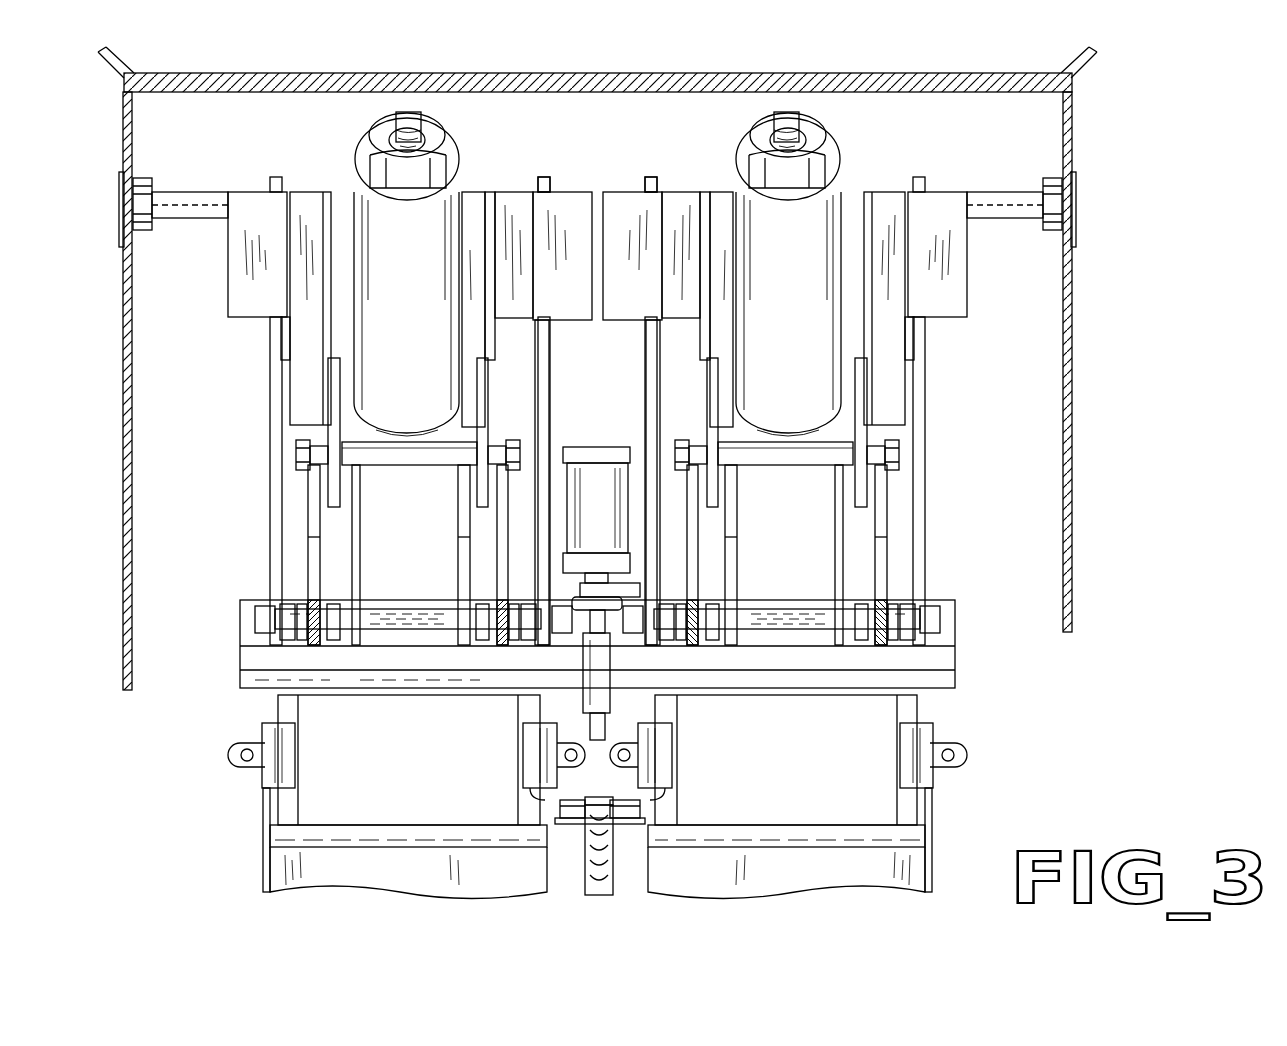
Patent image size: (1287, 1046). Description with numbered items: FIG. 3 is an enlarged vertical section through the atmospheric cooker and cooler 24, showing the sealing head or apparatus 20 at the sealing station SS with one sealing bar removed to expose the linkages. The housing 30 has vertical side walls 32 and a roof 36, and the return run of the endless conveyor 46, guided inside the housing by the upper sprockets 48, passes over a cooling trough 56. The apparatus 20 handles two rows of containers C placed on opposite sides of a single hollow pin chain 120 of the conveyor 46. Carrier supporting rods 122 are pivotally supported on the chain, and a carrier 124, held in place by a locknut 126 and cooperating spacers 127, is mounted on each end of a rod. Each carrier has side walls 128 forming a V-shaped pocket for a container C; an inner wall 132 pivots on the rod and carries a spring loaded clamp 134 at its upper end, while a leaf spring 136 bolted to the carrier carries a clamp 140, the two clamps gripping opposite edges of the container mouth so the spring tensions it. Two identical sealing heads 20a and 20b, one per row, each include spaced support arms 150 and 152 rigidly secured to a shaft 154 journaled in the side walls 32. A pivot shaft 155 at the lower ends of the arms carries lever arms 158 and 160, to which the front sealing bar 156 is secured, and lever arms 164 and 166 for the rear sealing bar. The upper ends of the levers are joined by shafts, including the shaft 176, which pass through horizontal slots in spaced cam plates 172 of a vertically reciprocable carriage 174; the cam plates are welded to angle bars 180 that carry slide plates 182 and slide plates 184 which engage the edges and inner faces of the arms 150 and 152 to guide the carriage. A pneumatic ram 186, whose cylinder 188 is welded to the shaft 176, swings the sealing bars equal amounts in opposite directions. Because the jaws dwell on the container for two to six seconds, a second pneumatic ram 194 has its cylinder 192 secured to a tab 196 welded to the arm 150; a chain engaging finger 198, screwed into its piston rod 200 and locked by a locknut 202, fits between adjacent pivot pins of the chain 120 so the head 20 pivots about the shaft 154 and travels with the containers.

The sealing head 20 is at (160, 135).
The sealing head 20a is at (955, 575).
The sealing head 20b is at (235, 572).
The atmospheric cooker and cooler 24 is at (1160, 82).
The housing 30 is at (1075, 143).
The side walls 32 is at (123, 265).
The roof 36 is at (241, 92).
The endless conveyor 46 is at (582, 850).
The upper sprockets 48 is at (613, 880).
The cooling trough 56 is at (670, 73).
The sealing station SS is at (910, 118).
The container C is at (390, 771).
The hollow pin chain 120 is at (598, 797).
The carrier supporting rod 122 is at (555, 821).
The carrier 124 is at (268, 840).
The locknut 126 is at (560, 800).
The spacers 127 is at (545, 790).
The side walls 128 is at (380, 878).
The inner wall 132 is at (645, 880).
The spring loaded clamp 134 is at (523, 757).
The leaf spring 136 is at (263, 800).
The clamp 140 is at (262, 735).
The support arm 150 is at (276, 178).
The support arm 152 is at (546, 178).
The shaft 154 is at (190, 192).
The pivot shaft 155 is at (400, 612).
The front sealing bar 156 is at (243, 636).
The lever arm 158 is at (360, 506).
The lever arm 160 is at (458, 522).
The lever arm 164 is at (320, 545).
The lever arm 166 is at (497, 555).
The cam plates 172 is at (328, 388).
The carriage 174 is at (226, 236).
The shaft 176 is at (597, 465).
The angle bars 180 is at (308, 200).
The slide plates 182 is at (240, 268).
The slide plates 184 is at (281, 337).
The pneumatic ram 186 is at (460, 145).
The cylinder 188 is at (418, 354).
The cylinder 192 is at (613, 511).
The pneumatic ram 194 is at (630, 445).
The tab 196 is at (630, 590).
The chain engaging finger 198 is at (590, 722).
The piston rod 200 is at (607, 625).
The locknut 202 is at (590, 630).